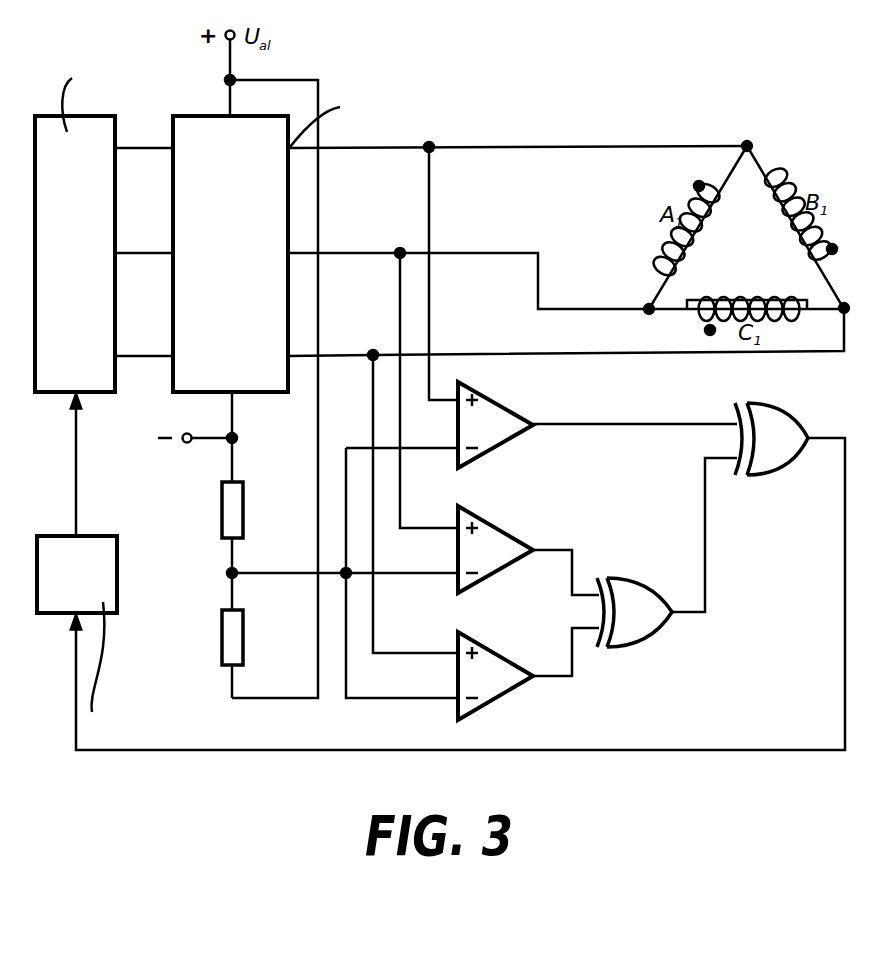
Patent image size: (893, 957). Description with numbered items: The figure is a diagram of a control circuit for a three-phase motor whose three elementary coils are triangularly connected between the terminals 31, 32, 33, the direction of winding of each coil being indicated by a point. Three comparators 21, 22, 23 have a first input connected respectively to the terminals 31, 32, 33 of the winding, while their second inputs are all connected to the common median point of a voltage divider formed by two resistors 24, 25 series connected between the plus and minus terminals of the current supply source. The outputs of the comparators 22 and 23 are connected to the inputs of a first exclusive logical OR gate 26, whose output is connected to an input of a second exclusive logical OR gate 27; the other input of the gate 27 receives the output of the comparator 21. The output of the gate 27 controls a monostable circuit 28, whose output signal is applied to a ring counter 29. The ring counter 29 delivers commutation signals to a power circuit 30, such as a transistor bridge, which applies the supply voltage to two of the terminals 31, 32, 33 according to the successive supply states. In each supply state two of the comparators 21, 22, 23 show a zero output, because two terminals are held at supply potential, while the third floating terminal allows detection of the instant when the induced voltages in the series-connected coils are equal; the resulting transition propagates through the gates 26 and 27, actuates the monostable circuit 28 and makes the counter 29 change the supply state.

The comparator 21 is at (497, 416).
The comparator 22 is at (490, 664).
The comparator 23 is at (497, 540).
The resistor 24 is at (230, 503).
The resistor 25 is at (230, 636).
The first exclusive logical OR gate 26 is at (637, 625).
The second exclusive logical OR gate 27 is at (772, 457).
The monostable circuit 28 is at (93, 591).
The ring counter 29 is at (90, 271).
The power circuit 30 is at (250, 271).
The terminal 31 is at (750, 130).
The terminal 32 is at (862, 312).
The terminal 33 is at (637, 326).